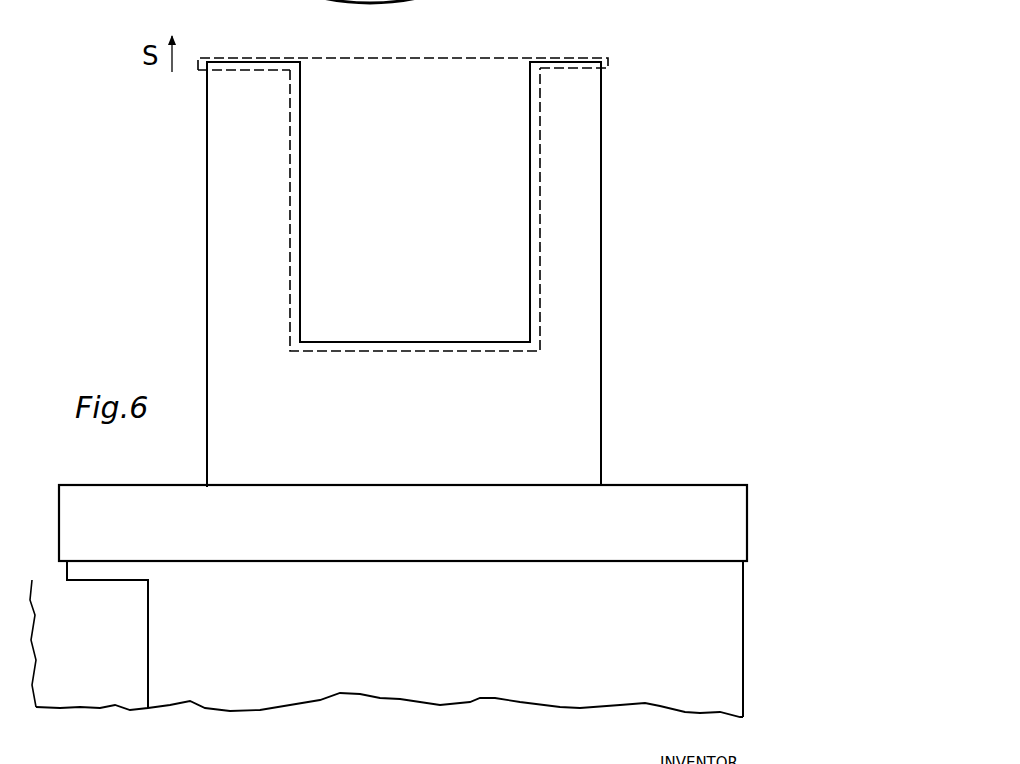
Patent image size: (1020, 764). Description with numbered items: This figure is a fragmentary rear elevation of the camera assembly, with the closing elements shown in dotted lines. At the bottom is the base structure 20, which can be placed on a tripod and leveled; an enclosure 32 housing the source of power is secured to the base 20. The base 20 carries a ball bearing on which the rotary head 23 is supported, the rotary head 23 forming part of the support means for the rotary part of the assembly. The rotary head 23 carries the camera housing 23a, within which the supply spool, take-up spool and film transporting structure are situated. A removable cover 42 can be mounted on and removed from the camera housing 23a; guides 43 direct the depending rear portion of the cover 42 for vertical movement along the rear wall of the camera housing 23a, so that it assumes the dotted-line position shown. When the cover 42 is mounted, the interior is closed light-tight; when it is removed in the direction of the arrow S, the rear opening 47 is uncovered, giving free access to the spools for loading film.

The guides 43 is at (233, 9).
The removable cover 42 is at (578, 55).
The rear opening 47 is at (530, 157).
The camera housing 23a is at (604, 283).
The rotary head 23 is at (656, 483).
The enclosure 32 is at (153, 638).
The base structure 20 is at (700, 719).